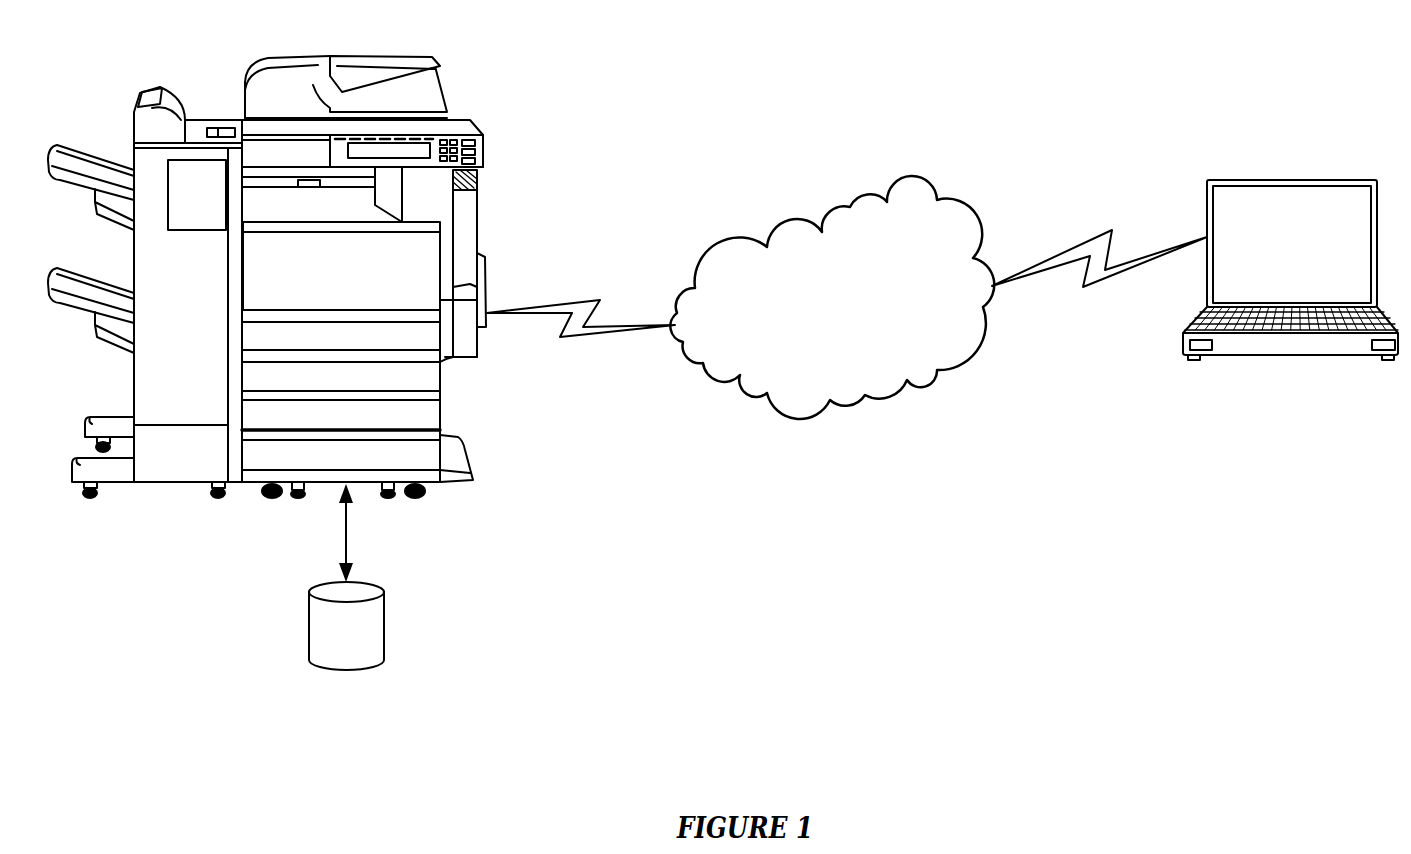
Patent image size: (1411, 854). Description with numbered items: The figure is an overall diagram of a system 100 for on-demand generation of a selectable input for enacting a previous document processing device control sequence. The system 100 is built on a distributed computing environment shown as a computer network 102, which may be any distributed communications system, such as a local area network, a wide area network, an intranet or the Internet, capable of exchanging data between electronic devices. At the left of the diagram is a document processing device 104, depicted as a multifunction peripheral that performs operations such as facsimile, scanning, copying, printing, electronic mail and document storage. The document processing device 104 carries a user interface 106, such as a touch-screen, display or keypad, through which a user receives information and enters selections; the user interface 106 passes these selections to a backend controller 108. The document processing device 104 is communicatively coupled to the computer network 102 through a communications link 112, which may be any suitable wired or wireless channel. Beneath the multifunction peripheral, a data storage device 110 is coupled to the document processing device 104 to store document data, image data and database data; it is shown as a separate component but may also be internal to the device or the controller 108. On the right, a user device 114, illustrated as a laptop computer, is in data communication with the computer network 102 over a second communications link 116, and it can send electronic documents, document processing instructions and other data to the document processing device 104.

The system 100 is at (1058, 55).
The computer network 102 is at (912, 176).
The document processing device 104 is at (293, 58).
The user interface 106 is at (483, 148).
The controller 108 is at (443, 253).
The data storage device 110 is at (372, 590).
The communications link 112 is at (598, 297).
The user device 114 is at (1283, 178).
The communications link 116 is at (1113, 231).